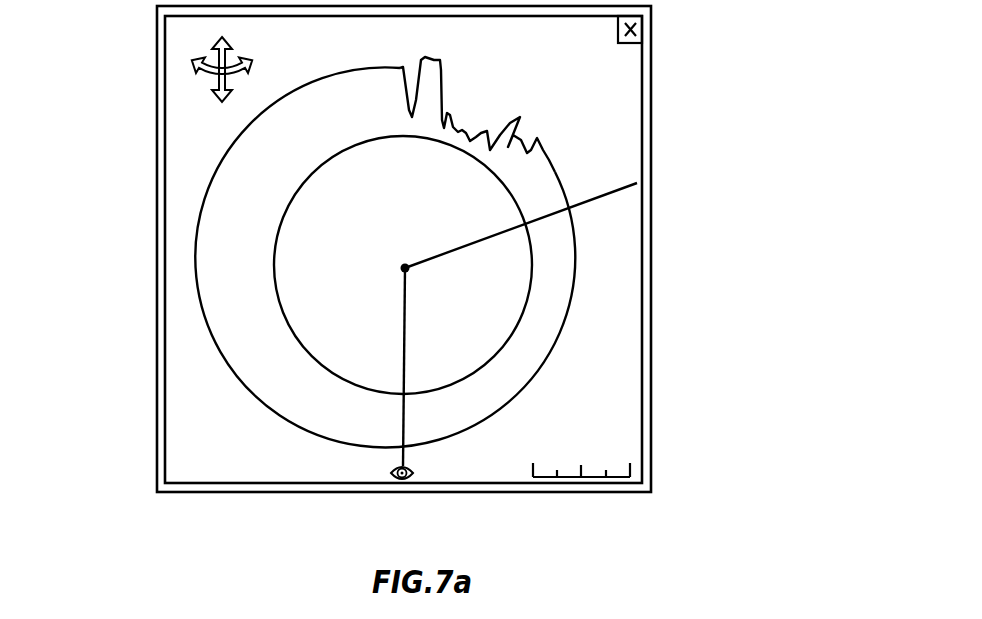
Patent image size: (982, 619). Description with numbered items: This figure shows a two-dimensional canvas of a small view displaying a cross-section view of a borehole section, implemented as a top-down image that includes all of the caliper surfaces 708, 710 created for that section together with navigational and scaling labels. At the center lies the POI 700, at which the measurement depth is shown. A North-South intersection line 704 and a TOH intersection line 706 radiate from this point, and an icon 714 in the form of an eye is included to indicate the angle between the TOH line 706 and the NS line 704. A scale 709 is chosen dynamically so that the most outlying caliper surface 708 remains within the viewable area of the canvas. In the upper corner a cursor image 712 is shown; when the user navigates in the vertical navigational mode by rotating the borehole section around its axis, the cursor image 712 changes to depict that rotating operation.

The POI 700 is at (405, 268).
The North-South intersection line 704 is at (400, 415).
The TOH intersection line 706 is at (605, 195).
The caliper surface 708 is at (272, 252).
The scale 709 is at (617, 477).
The caliper surface 710 is at (227, 362).
The cursor image 712 is at (197, 60).
The icon 714 is at (410, 478).